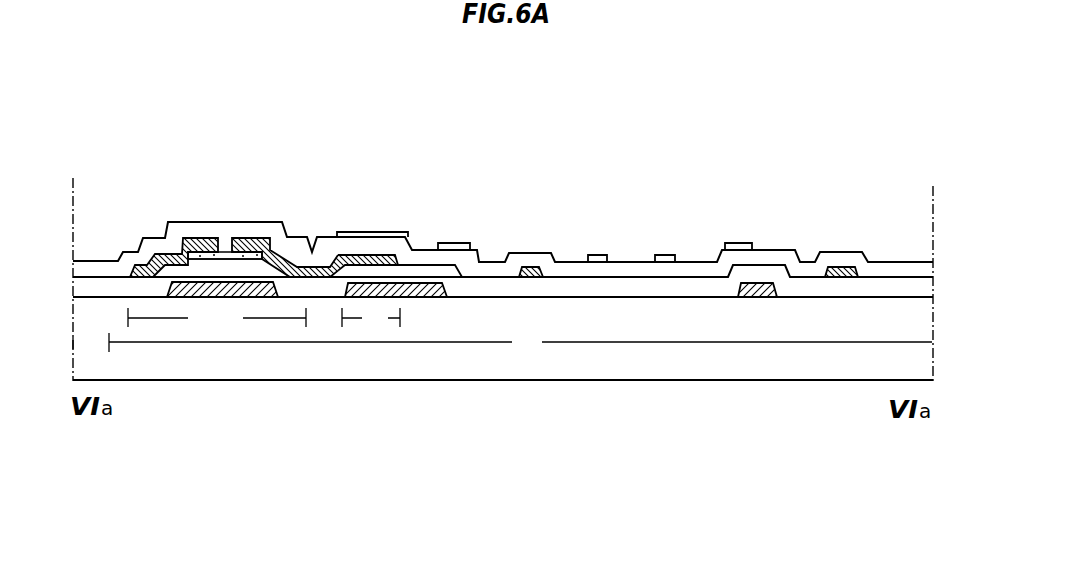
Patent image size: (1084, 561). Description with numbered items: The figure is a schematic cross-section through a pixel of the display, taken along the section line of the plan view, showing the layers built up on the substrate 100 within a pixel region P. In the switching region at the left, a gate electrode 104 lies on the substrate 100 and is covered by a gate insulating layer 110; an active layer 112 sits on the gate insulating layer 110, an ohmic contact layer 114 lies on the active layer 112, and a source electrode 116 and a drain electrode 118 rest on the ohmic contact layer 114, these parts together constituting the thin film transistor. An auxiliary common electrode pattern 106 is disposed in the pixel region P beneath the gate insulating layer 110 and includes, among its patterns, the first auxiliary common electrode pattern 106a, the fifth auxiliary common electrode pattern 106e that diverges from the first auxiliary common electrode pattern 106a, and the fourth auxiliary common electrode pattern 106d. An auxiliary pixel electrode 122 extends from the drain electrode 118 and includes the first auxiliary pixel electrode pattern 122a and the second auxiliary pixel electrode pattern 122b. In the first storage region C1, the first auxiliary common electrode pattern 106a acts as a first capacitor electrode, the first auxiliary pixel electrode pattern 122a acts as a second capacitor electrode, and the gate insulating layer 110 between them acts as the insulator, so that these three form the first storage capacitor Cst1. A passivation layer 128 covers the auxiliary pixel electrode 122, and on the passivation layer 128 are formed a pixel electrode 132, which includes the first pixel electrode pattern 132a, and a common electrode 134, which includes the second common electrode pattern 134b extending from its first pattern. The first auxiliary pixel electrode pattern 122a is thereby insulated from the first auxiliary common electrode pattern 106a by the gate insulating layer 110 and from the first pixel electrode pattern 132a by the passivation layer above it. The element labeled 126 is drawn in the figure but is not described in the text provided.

The substrate 100 is at (910, 370).
The gate electrode 104 is at (187, 298).
The auxiliary common electrode pattern 106 is at (583, 334).
The first auxiliary common electrode pattern 106a is at (350, 297).
The fifth auxiliary common electrode pattern 106e is at (430, 297).
The fourth auxiliary common electrode pattern 106d is at (768, 283).
The gate insulating layer 110 is at (627, 290).
The active layer 112 is at (200, 255).
The ohmic contact layer 114 is at (250, 256).
The source electrode 116 is at (138, 268).
The drain electrode 118 is at (294, 255).
The auxiliary pixel electrode 122 is at (448, 205).
The first auxiliary pixel electrode pattern 122a is at (380, 253).
The second auxiliary pixel electrode pattern 122b is at (535, 267).
The connection electrode 126 is at (847, 267).
The passivation layer 128 is at (892, 262).
The pixel electrode 132 is at (483, 184).
The first pixel electrode pattern 132a is at (348, 232).
The common electrode 134 is at (615, 193).
The second common electrode pattern 134b is at (475, 243).
The first storage capacitor Cst1 is at (418, 277).
The first storage region C1 is at (371, 318).
The pixel region P is at (502, 344).